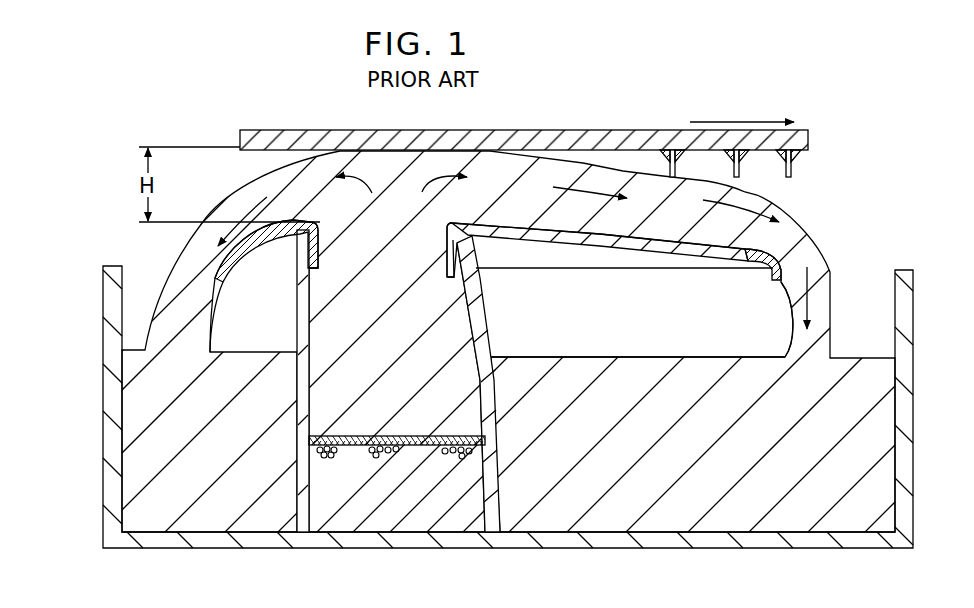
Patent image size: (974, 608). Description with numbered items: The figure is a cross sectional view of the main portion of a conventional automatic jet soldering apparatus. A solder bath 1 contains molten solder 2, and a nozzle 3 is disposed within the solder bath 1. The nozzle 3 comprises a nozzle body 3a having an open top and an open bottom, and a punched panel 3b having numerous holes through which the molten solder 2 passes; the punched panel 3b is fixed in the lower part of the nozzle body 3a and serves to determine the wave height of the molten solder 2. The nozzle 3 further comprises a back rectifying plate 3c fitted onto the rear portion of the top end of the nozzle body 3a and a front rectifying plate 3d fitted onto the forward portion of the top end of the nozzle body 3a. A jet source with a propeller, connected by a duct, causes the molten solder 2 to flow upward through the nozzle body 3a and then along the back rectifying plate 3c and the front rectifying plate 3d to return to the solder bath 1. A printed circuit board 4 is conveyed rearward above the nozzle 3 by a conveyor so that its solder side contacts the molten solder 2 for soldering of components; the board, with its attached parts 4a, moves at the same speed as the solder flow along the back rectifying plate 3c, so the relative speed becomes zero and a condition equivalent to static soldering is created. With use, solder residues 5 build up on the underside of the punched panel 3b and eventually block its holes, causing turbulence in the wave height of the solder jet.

The solder bath 1 is at (913, 330).
The molten solder 2 is at (665, 362).
The nozzle 3 is at (620, 377).
The nozzle body 3a is at (482, 353).
The punched panel 3b is at (427, 445).
The back rectifying plate 3c is at (602, 244).
The front rectifying plate 3d is at (249, 258).
The printed circuit board 4 is at (592, 129).
The pins 4a is at (795, 176).
The solder residues 5 is at (458, 455).